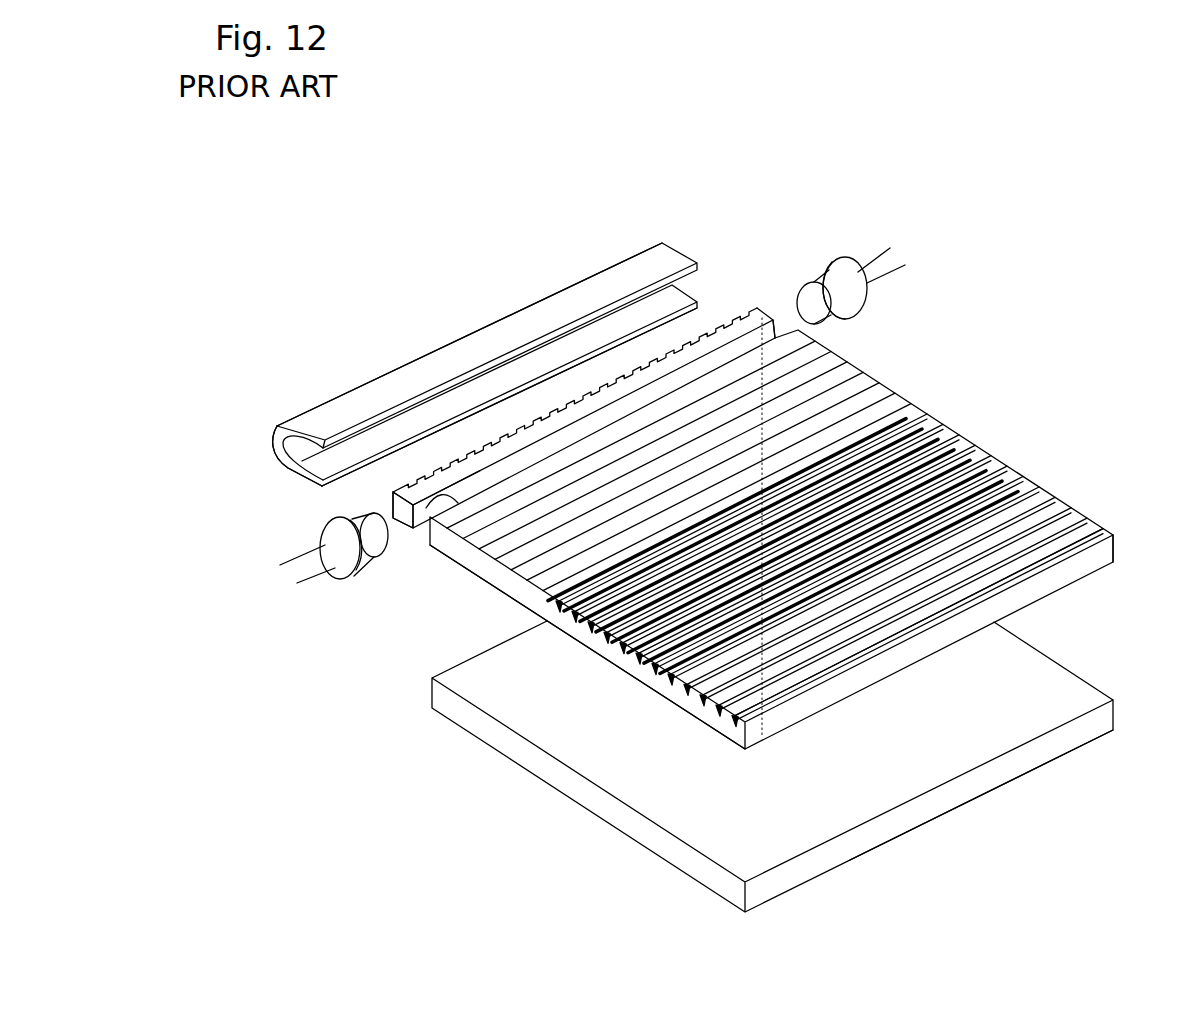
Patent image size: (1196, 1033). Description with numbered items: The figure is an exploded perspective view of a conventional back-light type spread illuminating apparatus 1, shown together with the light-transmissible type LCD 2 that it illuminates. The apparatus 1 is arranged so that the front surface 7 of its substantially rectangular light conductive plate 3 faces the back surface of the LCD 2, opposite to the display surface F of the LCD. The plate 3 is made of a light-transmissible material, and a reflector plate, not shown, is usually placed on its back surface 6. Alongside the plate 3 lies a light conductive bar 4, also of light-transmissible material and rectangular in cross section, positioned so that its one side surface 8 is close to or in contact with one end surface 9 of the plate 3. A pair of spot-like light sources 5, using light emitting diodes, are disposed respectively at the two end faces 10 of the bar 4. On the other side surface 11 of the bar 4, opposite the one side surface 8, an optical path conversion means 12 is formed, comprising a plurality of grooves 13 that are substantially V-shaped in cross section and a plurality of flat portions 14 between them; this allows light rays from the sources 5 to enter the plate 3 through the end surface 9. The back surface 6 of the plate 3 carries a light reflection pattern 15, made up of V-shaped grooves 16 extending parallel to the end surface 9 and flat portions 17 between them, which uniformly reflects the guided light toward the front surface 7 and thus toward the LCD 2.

The spread illuminating apparatus 1 is at (997, 268).
The light-transmissible type LCD 2 is at (957, 812).
The light conductive plate 3 is at (605, 648).
The light conductive bar 4 is at (747, 323).
The spot-like light source 5 is at (843, 265).
The back surface 6 is at (898, 452).
The front surface 7 is at (557, 620).
The one side surface 8 is at (507, 448).
The one end surface 9 is at (410, 530).
The end face 10 is at (435, 508).
The other side surface 11 is at (413, 484).
The optical path conversion means 12 is at (357, 229).
The groove 13 is at (527, 425).
The flat portion 14 is at (572, 392).
The light reflection pattern 15 is at (1050, 340).
The groove 16 is at (1000, 462).
The flat portion 17 is at (1007, 467).
The display surface F is at (1043, 767).